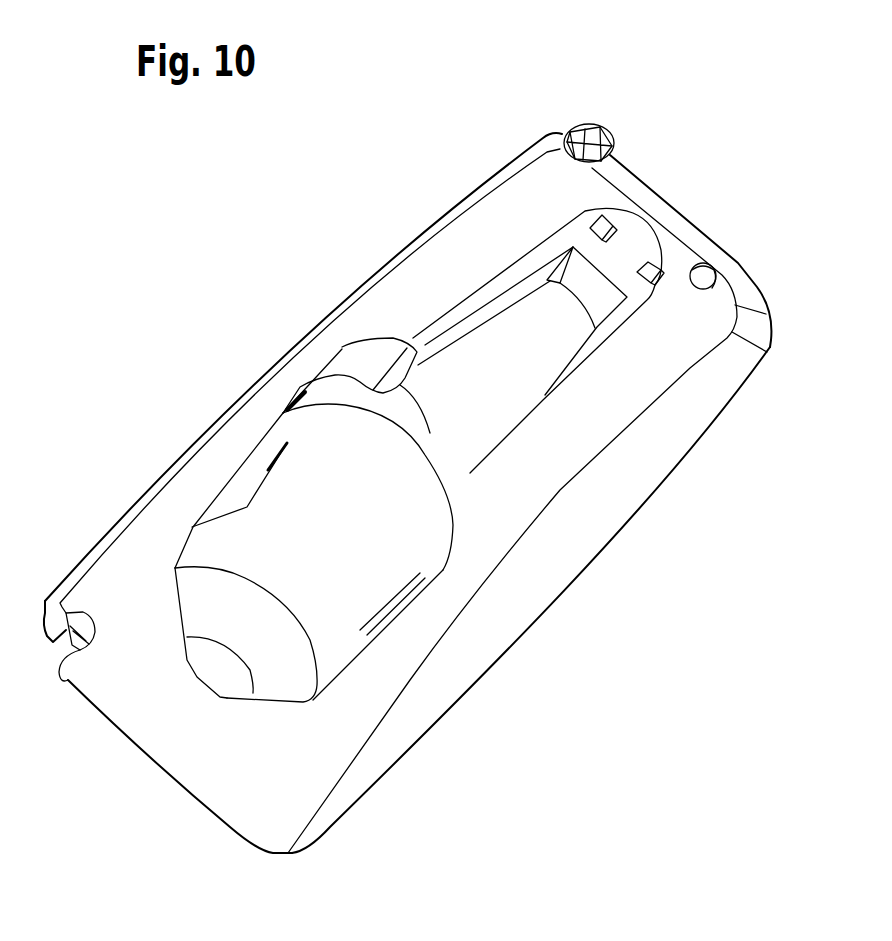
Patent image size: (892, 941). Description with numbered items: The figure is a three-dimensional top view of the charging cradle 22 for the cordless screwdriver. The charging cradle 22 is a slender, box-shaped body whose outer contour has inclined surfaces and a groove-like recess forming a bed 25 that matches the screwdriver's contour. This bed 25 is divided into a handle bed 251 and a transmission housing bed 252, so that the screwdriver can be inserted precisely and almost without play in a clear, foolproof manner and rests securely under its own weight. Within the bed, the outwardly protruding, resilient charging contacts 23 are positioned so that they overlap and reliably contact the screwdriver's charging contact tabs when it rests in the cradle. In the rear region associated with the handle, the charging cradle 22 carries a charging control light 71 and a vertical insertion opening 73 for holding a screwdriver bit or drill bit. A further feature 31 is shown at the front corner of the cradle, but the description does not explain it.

The charging cradle 22 is at (537, 110).
The vertical insertion opening 73 is at (605, 135).
The charging contacts 23 is at (648, 262).
The charging control light 71 is at (713, 268).
The handle bed 251 is at (518, 358).
The bed 25 is at (341, 347).
The transmission housing bed 252 is at (295, 567).
The slot / opening 31 is at (68, 652).